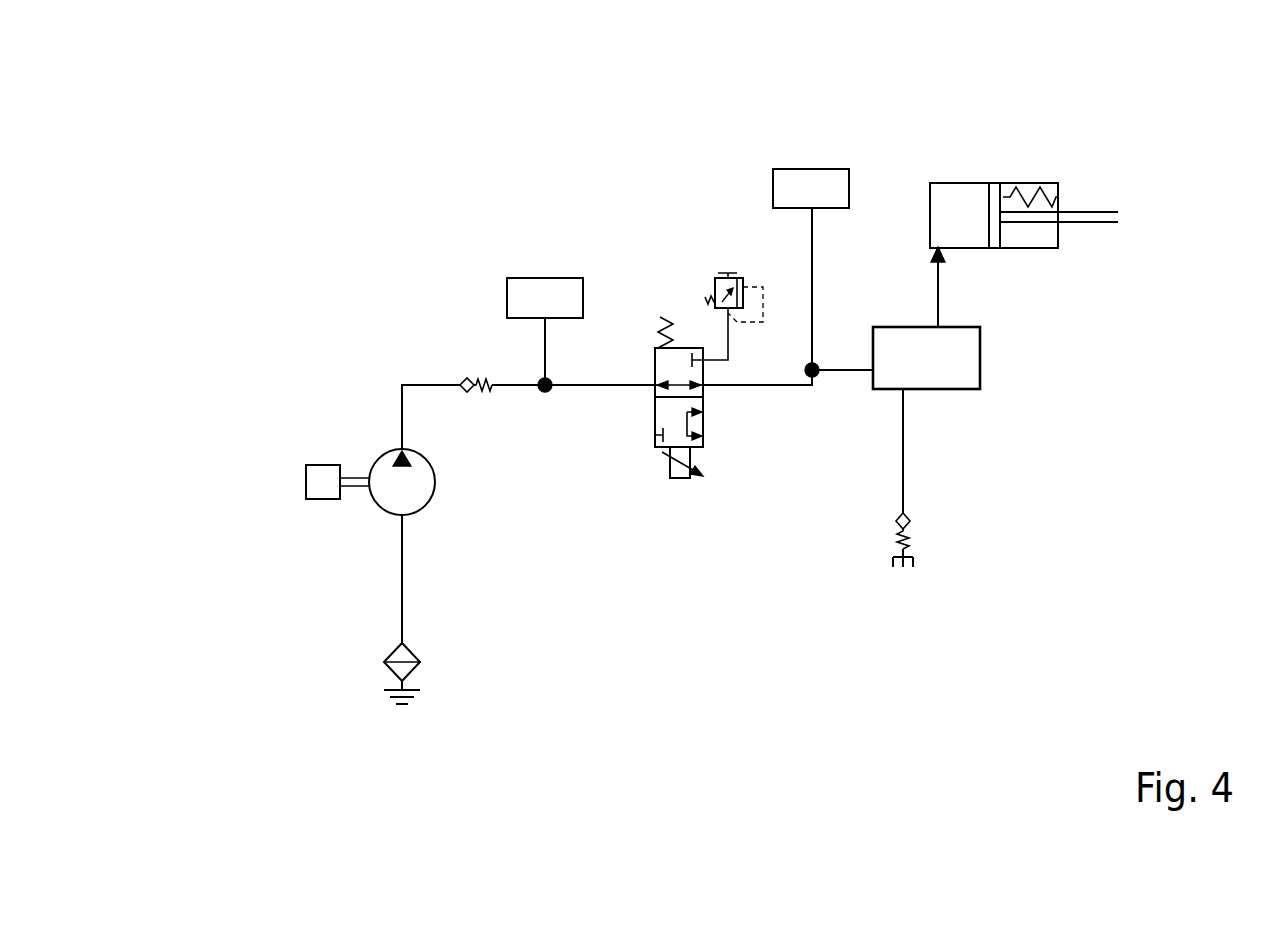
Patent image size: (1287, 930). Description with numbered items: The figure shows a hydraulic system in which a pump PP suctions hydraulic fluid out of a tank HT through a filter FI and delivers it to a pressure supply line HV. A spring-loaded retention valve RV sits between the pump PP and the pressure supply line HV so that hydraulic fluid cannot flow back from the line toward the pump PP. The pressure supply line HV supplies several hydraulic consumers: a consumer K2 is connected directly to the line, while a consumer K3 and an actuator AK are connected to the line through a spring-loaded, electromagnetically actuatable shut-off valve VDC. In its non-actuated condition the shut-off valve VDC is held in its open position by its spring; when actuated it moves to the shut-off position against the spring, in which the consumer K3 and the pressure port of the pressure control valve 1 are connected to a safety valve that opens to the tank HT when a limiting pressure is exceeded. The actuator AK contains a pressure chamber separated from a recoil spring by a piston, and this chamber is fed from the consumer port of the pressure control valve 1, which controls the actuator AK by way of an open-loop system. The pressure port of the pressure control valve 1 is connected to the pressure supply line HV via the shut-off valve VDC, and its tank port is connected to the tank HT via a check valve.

The pressure control valve 1 is at (985, 368).
The spring-loaded retention valve RV is at (457, 372).
The pump PP is at (360, 456).
The filter FI is at (378, 662).
The tank HT is at (382, 707).
The consumer K2 is at (532, 293).
The pressure supply line HV is at (608, 388).
The consumer K3 is at (822, 183).
The actuator AK is at (1000, 170).
The shut-off valve VDC is at (684, 494).